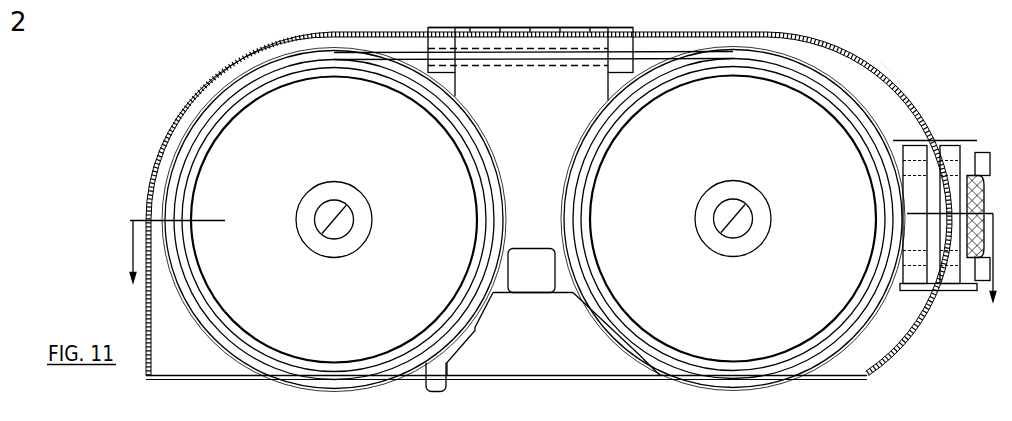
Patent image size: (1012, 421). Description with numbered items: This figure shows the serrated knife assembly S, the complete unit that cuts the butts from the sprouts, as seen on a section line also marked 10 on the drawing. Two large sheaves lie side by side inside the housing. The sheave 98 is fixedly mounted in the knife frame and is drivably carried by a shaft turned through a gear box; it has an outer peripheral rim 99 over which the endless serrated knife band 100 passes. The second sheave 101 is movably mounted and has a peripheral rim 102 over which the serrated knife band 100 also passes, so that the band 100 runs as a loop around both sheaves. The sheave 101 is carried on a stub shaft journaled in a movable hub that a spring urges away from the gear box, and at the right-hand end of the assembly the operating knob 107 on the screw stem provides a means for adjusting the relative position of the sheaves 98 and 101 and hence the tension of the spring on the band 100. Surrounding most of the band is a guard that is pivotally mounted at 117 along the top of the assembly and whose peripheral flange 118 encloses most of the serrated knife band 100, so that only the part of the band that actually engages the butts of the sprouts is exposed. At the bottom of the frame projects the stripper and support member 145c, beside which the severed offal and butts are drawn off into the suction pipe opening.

The serrated knife assembly S is at (212, 66).
The line 10—10 (section view reference) 10 is at (553, 265).
The sheave 98 is at (330, 153).
The outer peripheral rim 99 is at (196, 135).
The endless serrated knife band 100 is at (567, 375).
The second sheave 101 is at (736, 149).
The peripheral rim 102 is at (870, 153).
The operating knob 107 is at (977, 176).
The pivotal mounting 117 is at (545, 32).
The peripheral flange 118 is at (910, 99).
The stripper and support member 145c is at (447, 386).